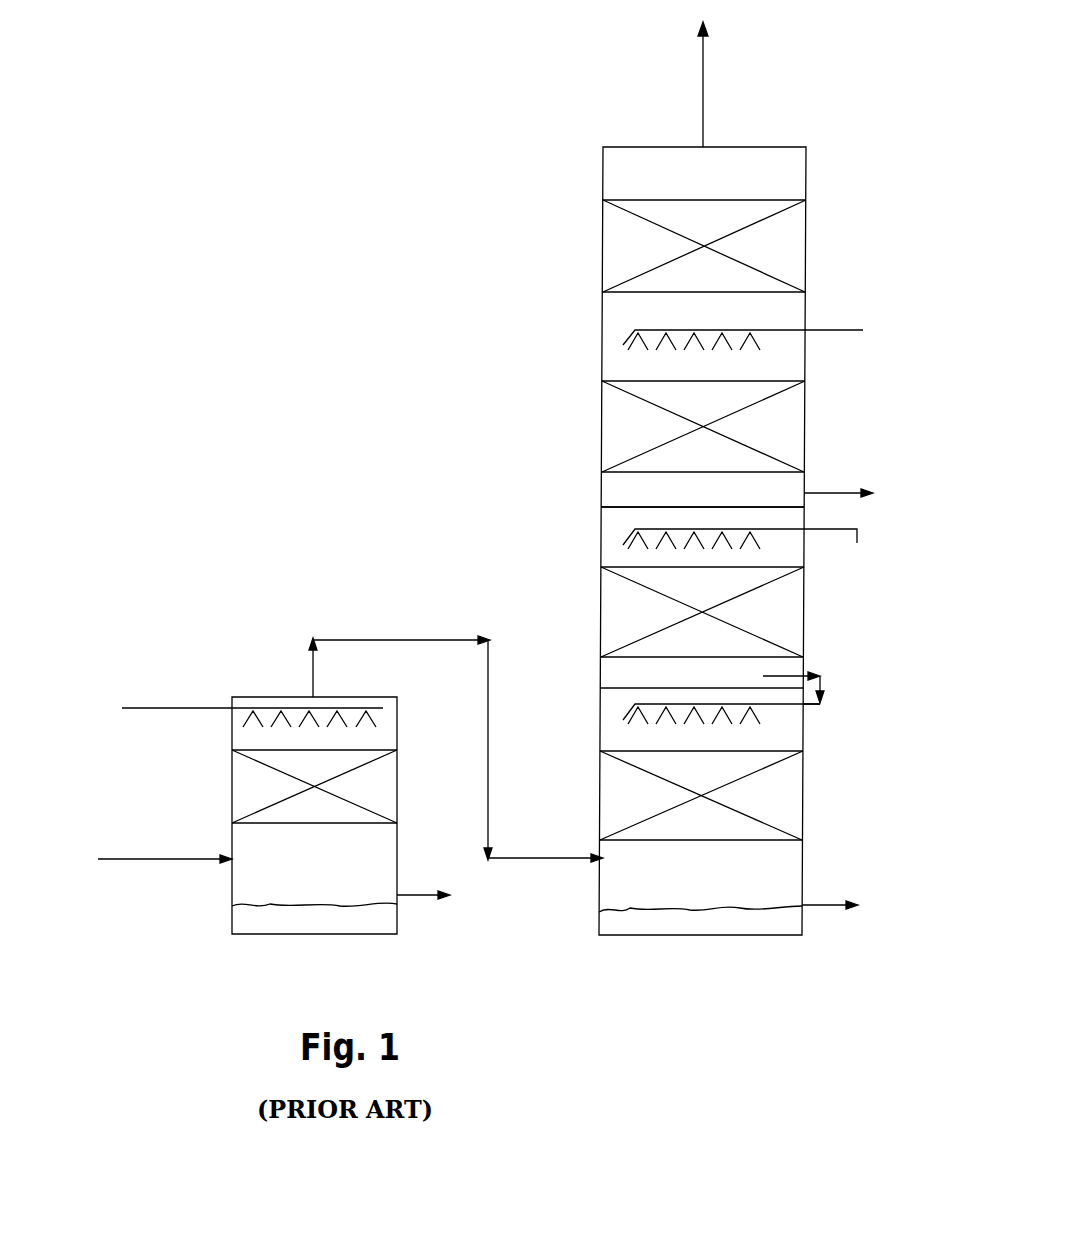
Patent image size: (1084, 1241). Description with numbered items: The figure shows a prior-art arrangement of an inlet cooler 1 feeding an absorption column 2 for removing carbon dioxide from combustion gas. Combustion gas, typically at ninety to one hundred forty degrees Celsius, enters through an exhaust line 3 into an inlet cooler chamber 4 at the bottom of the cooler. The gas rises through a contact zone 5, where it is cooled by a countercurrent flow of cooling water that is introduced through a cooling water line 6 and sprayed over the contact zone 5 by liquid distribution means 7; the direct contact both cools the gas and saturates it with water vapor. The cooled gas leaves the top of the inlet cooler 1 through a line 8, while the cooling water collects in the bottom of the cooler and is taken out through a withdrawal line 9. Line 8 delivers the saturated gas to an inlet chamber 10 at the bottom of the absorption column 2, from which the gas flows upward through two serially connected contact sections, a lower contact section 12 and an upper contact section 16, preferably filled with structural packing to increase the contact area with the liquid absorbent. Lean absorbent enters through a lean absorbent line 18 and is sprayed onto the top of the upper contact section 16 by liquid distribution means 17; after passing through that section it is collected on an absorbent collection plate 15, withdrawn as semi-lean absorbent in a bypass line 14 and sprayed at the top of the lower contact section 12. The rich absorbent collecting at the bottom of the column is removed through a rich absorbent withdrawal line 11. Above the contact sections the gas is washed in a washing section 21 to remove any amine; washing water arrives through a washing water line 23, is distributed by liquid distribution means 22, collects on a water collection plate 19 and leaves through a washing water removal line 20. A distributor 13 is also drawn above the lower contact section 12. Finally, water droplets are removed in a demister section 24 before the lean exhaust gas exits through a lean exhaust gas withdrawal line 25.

The inlet cooler 1 is at (222, 500).
The absorption column 2 is at (420, 235).
The exhaust line 3 is at (145, 878).
The inlet cooler chamber 4 is at (292, 862).
The contact zone 5 is at (271, 805).
The cooling water line 6 is at (138, 707).
The liquid distribution means 7 is at (272, 710).
The line 8 is at (417, 638).
The withdrawal line 9 is at (440, 900).
The inlet chamber 10 is at (676, 880).
The rich absorbent withdrawal line 11 is at (855, 915).
The lower contact section 12 is at (645, 807).
The lower liquid distributor 13 is at (623, 720).
The bypass line 14 is at (863, 662).
The absorbent collection plate 15 is at (600, 688).
The upper contact section 16 is at (645, 622).
The liquid distribution means 17 is at (760, 547).
The lean absorbent line 18 is at (857, 543).
The water collection plate 19 is at (635, 512).
The washing water removal line 20 is at (828, 488).
The washing section 21 is at (645, 433).
The liquid distribution means 22 is at (623, 345).
The washing water line 23 is at (842, 329).
The demister section 24 is at (645, 258).
The lean exhaust gas withdrawal line 25 is at (705, 62).